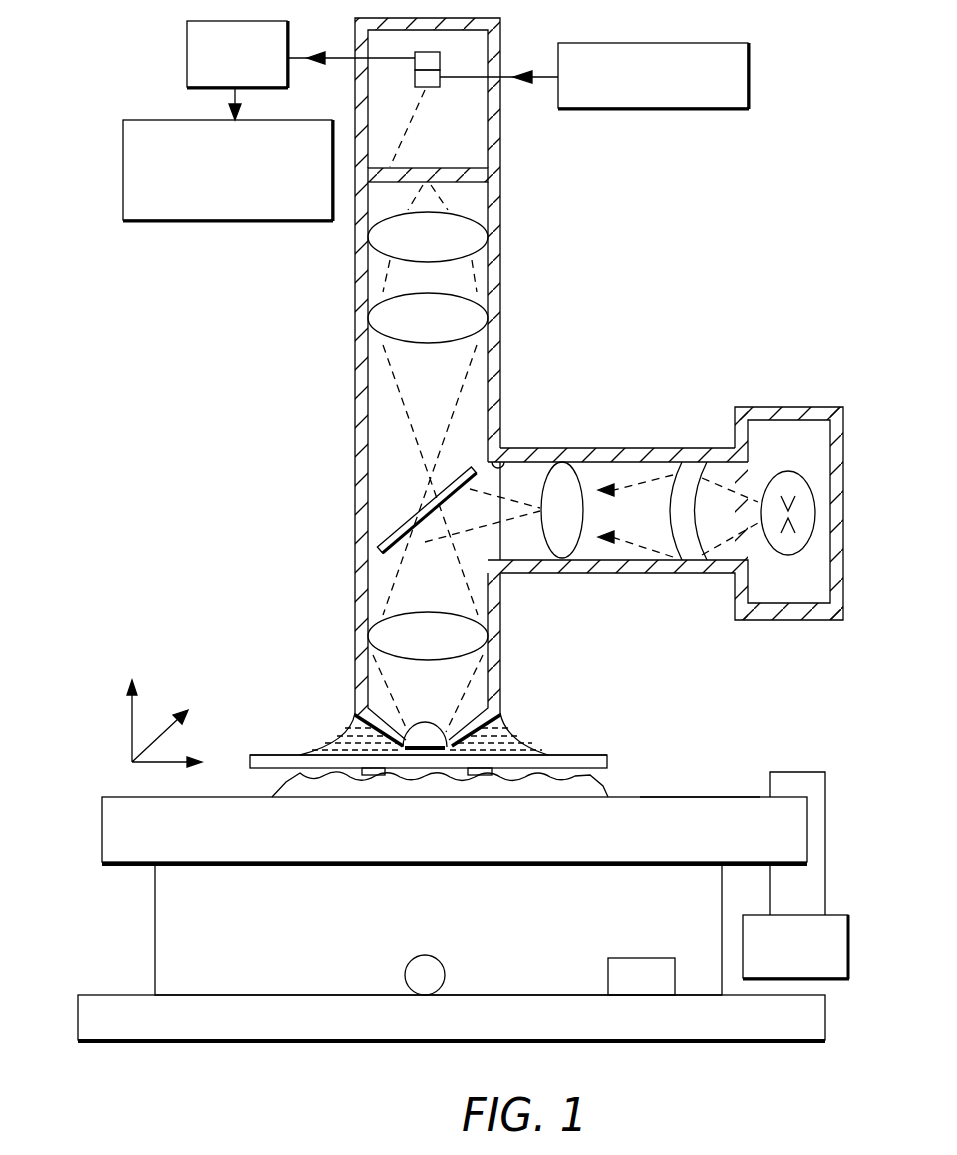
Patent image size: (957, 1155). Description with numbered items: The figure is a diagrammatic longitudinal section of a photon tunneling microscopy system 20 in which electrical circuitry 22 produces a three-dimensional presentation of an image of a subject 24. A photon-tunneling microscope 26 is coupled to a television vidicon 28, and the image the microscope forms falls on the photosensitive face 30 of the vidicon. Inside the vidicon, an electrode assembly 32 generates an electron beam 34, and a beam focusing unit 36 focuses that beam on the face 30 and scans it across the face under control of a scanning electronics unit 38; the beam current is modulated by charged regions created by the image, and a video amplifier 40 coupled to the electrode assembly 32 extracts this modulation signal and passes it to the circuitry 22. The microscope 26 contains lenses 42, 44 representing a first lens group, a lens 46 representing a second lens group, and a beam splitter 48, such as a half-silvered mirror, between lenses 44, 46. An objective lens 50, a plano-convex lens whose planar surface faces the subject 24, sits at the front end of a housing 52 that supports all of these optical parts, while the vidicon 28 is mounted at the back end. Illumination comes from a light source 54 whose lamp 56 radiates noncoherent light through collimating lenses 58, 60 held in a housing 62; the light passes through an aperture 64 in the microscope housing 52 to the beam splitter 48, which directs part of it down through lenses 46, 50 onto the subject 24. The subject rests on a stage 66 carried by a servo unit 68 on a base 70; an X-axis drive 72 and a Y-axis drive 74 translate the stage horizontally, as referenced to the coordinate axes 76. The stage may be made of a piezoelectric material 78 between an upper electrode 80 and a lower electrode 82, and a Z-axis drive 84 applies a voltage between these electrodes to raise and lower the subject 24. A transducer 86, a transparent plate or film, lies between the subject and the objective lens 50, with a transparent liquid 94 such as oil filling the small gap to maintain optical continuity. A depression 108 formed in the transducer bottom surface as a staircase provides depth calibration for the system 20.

The photon tunneling microscopy system 20 is at (296, 339).
The electrical circuitry 22 is at (123, 166).
The subject 24 is at (598, 796).
The photon-tunneling microscope 26 is at (512, 320).
The television vidicon 28 is at (500, 133).
The photosensitive face 30 is at (468, 186).
The electrode assembly 32 is at (441, 58).
The electron beam 34 is at (405, 137).
The beam focusing unit 36 is at (415, 80).
The scanning electronics unit 38 is at (660, 108).
The video amplifier 40 is at (187, 62).
The lens 42 is at (473, 252).
The lens 44 is at (462, 340).
The lens 46 is at (468, 657).
The beam splitter 48 is at (395, 530).
The objective lens 50 is at (433, 718).
The housing 52 is at (354, 596).
The light source 54 is at (660, 440).
The lamp 56 is at (791, 555).
The lens 58 is at (712, 562).
The lens 60 is at (578, 548).
The housing 62 is at (613, 448).
The aperture 64 is at (502, 458).
The stage 66 is at (703, 788).
The servo unit 68 is at (155, 953).
The base 70 is at (272, 1042).
The X-axis drive 72 is at (633, 958).
The Y-axis drive 74 is at (405, 975).
The coordinate axes 76 is at (138, 711).
The piezoelectric material 78 is at (117, 829).
The upper electrode 80 is at (736, 797).
The lower electrode 82 is at (125, 864).
The Z-axis drive 84 is at (838, 980).
The transducer 86 is at (607, 762).
The transparent liquid 94 is at (320, 748).
The depression 108 is at (370, 745).